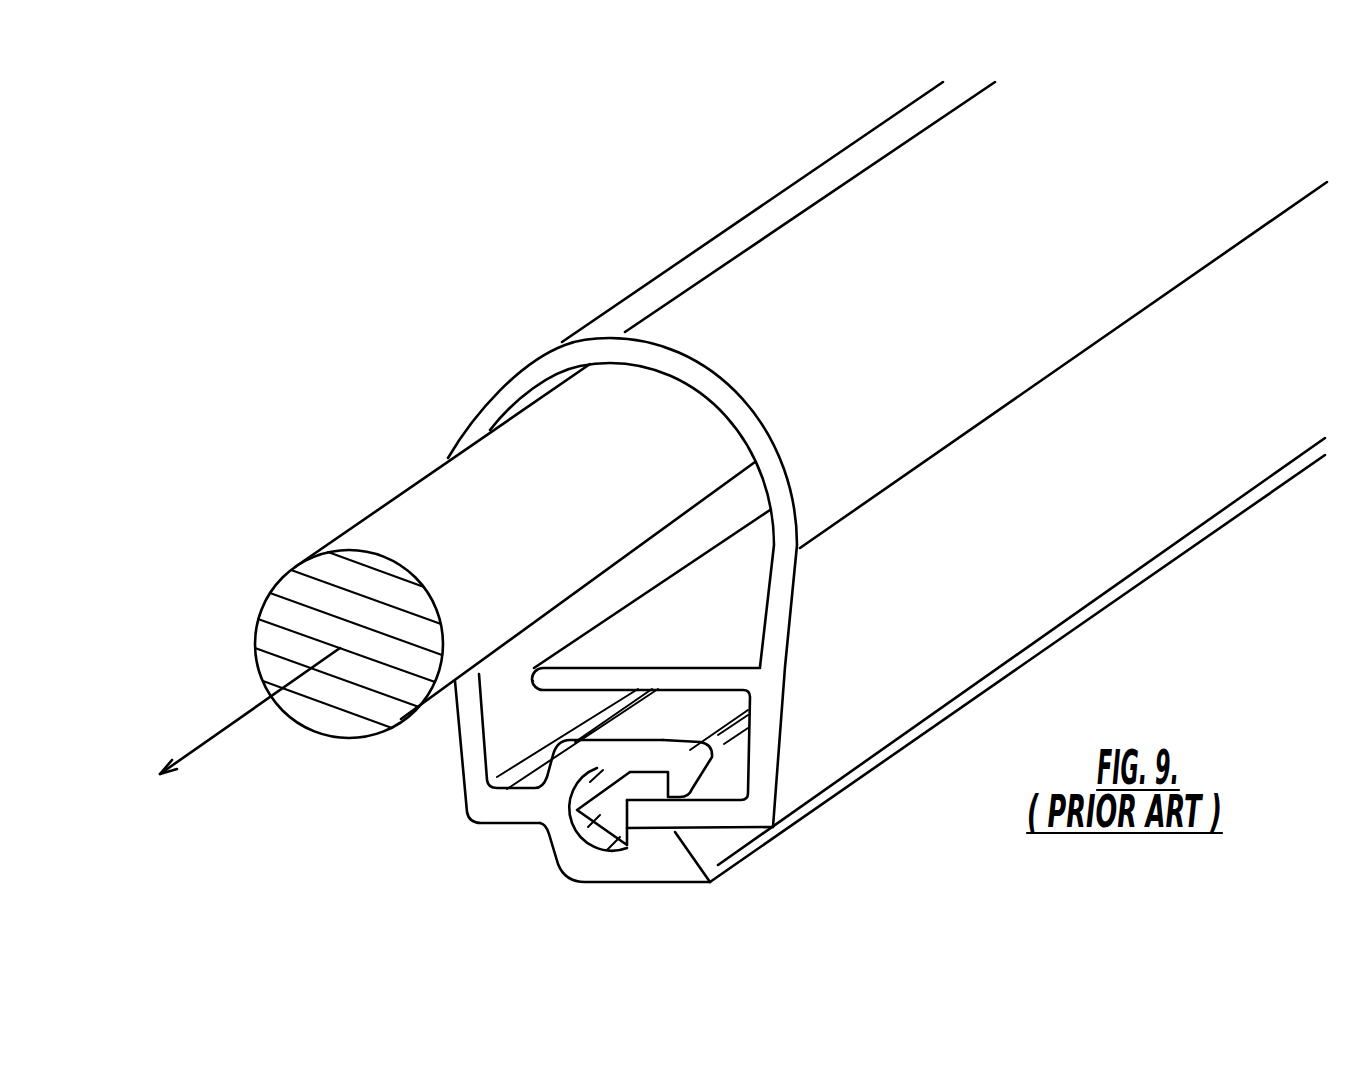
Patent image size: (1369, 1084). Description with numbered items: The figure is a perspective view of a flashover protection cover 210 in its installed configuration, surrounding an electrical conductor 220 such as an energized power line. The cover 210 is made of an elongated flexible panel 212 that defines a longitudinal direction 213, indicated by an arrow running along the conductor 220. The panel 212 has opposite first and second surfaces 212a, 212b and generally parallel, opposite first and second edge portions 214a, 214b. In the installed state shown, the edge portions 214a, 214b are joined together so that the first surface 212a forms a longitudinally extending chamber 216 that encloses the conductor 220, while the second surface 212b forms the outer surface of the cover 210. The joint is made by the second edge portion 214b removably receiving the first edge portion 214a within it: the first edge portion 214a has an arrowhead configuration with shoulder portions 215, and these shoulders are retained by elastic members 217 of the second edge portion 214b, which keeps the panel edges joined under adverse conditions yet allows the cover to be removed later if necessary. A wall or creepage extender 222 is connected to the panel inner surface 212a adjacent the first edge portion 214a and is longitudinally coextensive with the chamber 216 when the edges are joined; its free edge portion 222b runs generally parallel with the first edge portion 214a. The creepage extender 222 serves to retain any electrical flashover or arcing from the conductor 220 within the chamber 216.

The flashover protection cover 210 is at (801, 150).
The elongated flexible panel 212 is at (688, 258).
The first surface 212a is at (535, 395).
The second surface 212b is at (846, 343).
The longitudinal direction 213 is at (204, 742).
The first edge portion 214a is at (635, 813).
The second edge portion 214b is at (556, 868).
The shoulder portions 215 is at (622, 846).
The longitudinally extending chamber 216 is at (552, 628).
The elastic members 217 is at (685, 756).
The electrical conductor 220 is at (387, 522).
The creepage extender 222 is at (720, 636).
The free edge portion 222b is at (531, 669).